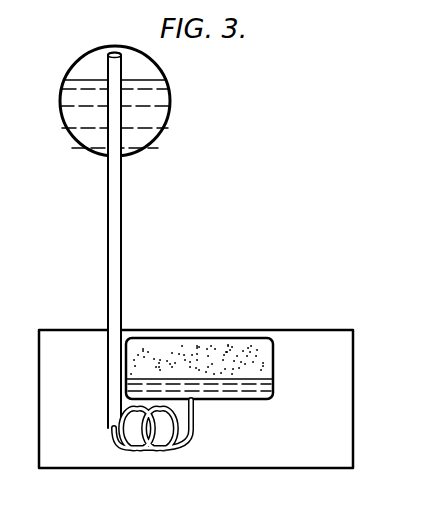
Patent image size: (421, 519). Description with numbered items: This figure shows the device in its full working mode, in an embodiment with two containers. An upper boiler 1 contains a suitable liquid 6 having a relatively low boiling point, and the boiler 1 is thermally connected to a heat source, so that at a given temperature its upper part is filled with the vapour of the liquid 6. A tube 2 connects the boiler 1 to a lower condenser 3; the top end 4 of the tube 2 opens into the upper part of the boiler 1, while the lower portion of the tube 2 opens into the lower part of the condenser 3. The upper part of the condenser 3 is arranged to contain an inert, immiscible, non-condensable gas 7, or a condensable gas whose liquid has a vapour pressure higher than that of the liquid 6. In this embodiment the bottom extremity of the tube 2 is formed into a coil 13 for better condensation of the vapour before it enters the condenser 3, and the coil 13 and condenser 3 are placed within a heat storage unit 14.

The upper boiler 1 is at (60, 96).
The tube 2 is at (124, 208).
The lower condenser 3 is at (212, 340).
The top end of the tube 4 is at (112, 53).
The liquid 6 is at (74, 118).
The inert, immiscible, non-condensable gas 7 is at (175, 352).
The coil 13 is at (175, 450).
The heat storage unit 14 is at (275, 467).